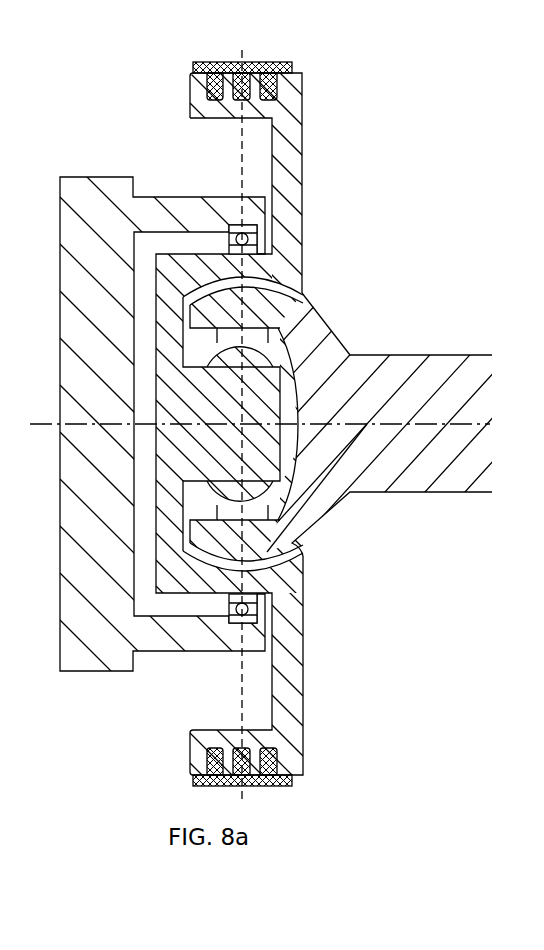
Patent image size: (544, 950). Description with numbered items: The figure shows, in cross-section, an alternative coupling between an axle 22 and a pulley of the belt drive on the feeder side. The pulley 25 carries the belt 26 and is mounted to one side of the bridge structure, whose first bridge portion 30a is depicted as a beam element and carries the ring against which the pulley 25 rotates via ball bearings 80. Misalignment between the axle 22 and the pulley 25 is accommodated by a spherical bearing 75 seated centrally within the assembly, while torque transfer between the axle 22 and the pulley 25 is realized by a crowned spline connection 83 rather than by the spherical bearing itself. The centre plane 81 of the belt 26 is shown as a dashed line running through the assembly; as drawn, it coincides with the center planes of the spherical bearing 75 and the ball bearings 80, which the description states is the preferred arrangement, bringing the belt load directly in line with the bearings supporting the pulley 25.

The shaft 22 is at (438, 372).
The first pulley 25 is at (284, 158).
The belt 26 is at (265, 72).
The first bridge portion 30a is at (83, 205).
The spherical bearing 75 is at (268, 353).
The ball bearing 80 is at (230, 232).
The centre plane of the belt 81 is at (242, 165).
The crowned spline connection 83 is at (277, 276).